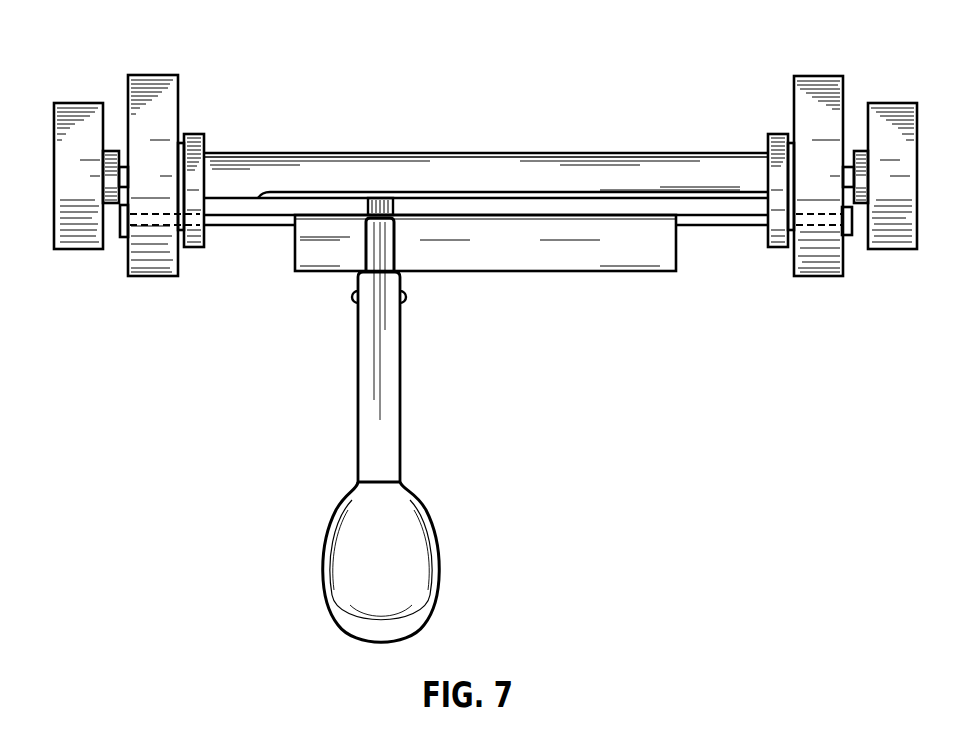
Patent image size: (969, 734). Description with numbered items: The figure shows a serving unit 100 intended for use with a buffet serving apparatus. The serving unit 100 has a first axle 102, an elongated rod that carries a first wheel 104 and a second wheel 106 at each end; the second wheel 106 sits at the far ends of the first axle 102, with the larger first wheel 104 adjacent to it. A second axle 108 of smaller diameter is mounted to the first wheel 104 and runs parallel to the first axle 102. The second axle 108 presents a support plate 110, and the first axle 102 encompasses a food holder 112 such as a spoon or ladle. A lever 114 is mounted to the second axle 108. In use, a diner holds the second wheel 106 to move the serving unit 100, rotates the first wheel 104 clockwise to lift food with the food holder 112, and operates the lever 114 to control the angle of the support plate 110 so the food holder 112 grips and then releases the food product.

The serving unit 100 is at (150, 36).
The first axle 102 is at (528, 168).
The first wheel 104 is at (827, 118).
The second wheel 106 is at (884, 235).
The second axle 108 is at (706, 219).
The support plate 110 is at (503, 248).
The food holder 112 is at (387, 410).
The lever 114 is at (778, 240).